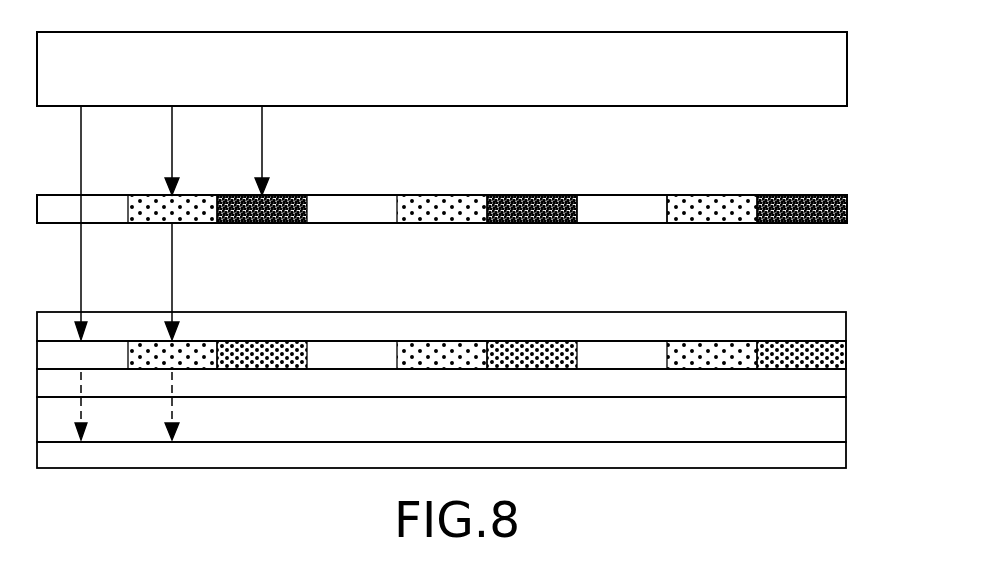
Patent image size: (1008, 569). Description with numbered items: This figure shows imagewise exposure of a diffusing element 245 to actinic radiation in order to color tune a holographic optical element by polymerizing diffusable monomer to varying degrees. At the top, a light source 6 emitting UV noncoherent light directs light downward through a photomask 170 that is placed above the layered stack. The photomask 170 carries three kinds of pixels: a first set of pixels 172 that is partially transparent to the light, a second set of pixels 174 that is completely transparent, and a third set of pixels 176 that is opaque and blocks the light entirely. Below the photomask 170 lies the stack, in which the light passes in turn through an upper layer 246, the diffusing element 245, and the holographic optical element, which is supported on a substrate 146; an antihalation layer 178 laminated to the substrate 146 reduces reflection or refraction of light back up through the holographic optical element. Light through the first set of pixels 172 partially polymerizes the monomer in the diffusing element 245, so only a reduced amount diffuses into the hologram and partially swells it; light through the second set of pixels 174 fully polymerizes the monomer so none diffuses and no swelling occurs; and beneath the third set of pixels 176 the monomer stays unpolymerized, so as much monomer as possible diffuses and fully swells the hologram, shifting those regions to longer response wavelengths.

The light source 6 is at (731, 32).
The photomask 170 is at (464, 183).
The first set of pixels 172 is at (692, 196).
The second set of pixels 174 is at (605, 196).
The third set of pixels 176 is at (517, 196).
The layer 246 is at (846, 331).
The diffusing element 245 is at (846, 358).
The substrate 146 is at (846, 419).
The antihalation layer 178 is at (846, 456).